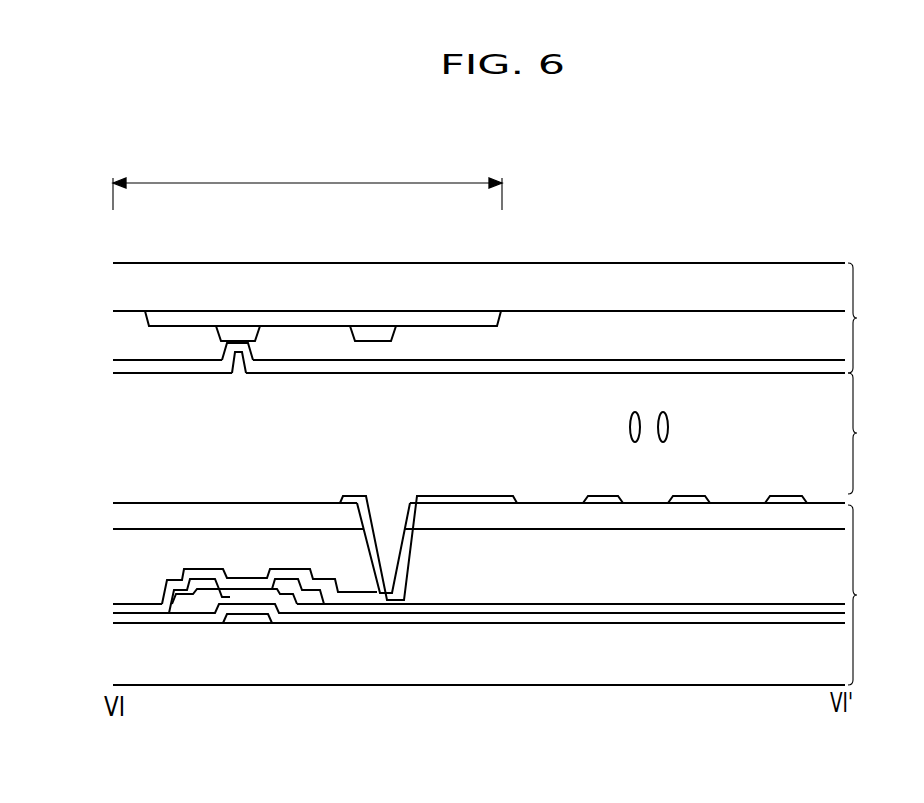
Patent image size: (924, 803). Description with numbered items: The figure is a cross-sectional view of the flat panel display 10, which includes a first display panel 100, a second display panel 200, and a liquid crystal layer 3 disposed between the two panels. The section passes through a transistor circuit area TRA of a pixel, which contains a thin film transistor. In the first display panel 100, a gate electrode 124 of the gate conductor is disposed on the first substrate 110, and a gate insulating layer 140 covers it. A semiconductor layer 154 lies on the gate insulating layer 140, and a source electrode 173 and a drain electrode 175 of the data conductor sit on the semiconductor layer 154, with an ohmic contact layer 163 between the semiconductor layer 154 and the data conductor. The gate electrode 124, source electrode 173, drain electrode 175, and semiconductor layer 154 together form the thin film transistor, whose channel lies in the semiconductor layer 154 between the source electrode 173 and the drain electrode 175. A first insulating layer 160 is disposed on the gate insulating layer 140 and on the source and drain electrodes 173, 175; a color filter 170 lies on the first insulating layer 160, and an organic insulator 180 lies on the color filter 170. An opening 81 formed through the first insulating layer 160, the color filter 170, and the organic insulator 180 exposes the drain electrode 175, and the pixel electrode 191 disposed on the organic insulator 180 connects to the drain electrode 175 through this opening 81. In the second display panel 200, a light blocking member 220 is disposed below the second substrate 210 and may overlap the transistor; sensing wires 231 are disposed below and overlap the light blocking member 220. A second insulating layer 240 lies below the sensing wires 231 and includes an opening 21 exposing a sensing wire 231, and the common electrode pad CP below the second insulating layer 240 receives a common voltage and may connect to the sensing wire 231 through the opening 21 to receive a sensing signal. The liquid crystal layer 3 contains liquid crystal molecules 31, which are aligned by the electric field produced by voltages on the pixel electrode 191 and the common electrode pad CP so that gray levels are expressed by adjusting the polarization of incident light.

The flat panel display 10 is at (492, 160).
The transistor circuit area TRA is at (307, 180).
The second display panel 200 is at (872, 318).
The second substrate 210 is at (765, 286).
The light blocking member 220 is at (462, 317).
The sensing wires 231 is at (240, 330).
The second insulating layer 240 is at (608, 340).
The common electrode pad CP is at (113, 365).
The opening 21 is at (252, 352).
The liquid crystal layer 3 is at (862, 433).
The liquid crystal molecules 31 is at (670, 426).
The first display panel 100 is at (872, 595).
The first substrate 110 is at (580, 653).
The gate electrode 124 is at (247, 618).
The gate insulating layer 140 is at (287, 618).
The semiconductor layer 154 is at (197, 610).
The ohmic contact layer 163 is at (187, 600).
The source electrode 173 is at (207, 584).
The drain electrode 175 is at (325, 600).
The first insulating layer 160 is at (505, 608).
The color filter 170 is at (722, 567).
The organic insulator 180 is at (660, 515).
The opening 81 is at (416, 548).
The pixel electrode 191 is at (355, 497).